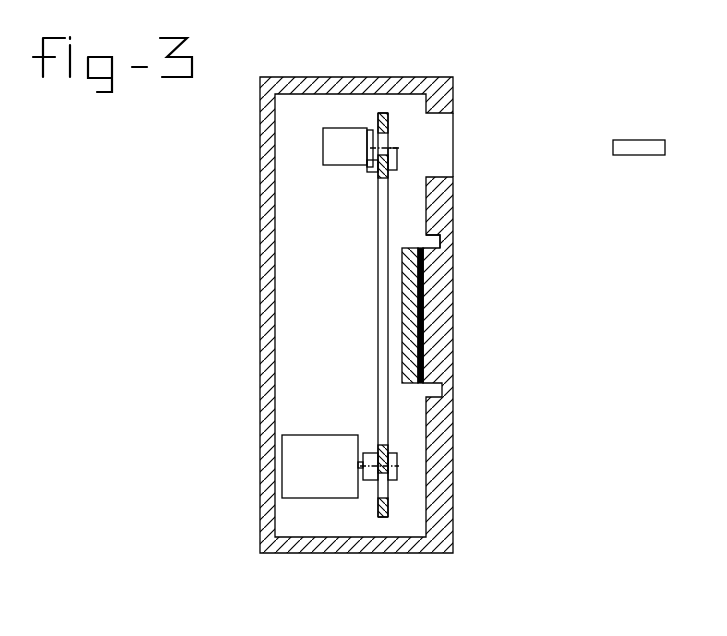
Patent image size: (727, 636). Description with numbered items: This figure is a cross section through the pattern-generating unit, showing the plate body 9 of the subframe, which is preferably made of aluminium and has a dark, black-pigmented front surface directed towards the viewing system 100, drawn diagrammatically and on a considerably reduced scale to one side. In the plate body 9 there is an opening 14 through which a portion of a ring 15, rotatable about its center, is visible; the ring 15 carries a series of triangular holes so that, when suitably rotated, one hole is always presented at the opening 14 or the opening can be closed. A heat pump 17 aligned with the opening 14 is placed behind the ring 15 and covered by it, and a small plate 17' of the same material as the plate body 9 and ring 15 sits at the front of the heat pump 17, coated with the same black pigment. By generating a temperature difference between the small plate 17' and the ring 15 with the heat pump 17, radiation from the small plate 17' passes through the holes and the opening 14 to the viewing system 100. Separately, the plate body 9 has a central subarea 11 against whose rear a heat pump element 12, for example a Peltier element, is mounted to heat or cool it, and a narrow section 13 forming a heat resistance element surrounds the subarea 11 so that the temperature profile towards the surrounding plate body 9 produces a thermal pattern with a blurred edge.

The plate body 9 is at (447, 213).
The central subarea 11 is at (435, 337).
The heat pump element 12 is at (413, 298).
The narrow section 13 is at (437, 245).
The opening 14 is at (444, 115).
The ring 15 is at (388, 114).
The heat pump 17 is at (324, 263).
The small plate 17' is at (373, 241).
The viewing system 100 is at (633, 148).